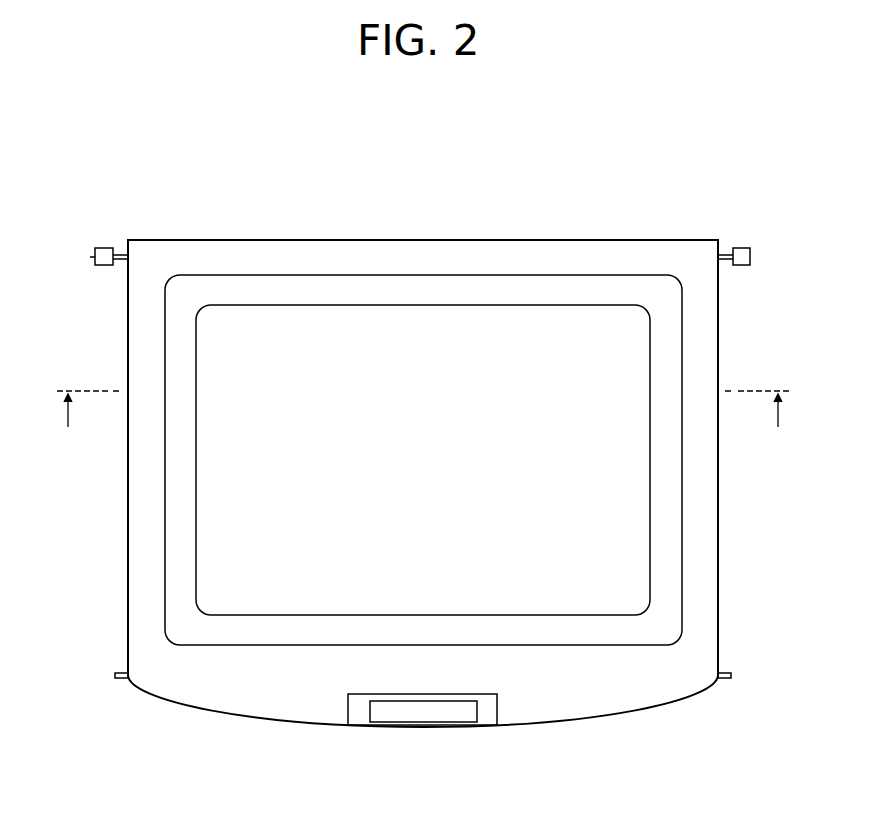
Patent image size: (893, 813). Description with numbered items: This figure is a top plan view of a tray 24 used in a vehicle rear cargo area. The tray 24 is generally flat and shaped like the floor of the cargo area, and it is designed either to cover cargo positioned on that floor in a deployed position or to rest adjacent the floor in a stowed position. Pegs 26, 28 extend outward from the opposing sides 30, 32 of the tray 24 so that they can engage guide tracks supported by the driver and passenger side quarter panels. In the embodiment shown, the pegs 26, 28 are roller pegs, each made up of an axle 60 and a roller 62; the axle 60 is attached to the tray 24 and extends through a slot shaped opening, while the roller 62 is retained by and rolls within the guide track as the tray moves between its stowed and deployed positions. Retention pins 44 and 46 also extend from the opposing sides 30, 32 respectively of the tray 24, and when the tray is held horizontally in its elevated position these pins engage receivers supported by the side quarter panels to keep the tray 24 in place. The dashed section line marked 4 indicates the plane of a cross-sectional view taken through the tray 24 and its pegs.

The tray 24 is at (429, 236).
The peg 26 is at (112, 239).
The peg 28 is at (745, 247).
The side 30 is at (128, 513).
The side 32 is at (718, 510).
The retention pin 44 is at (118, 679).
The retention pin 46 is at (724, 680).
The axle 60 is at (122, 254).
The roller 62 is at (95, 258).
The section line 4- 4 is at (423, 423).